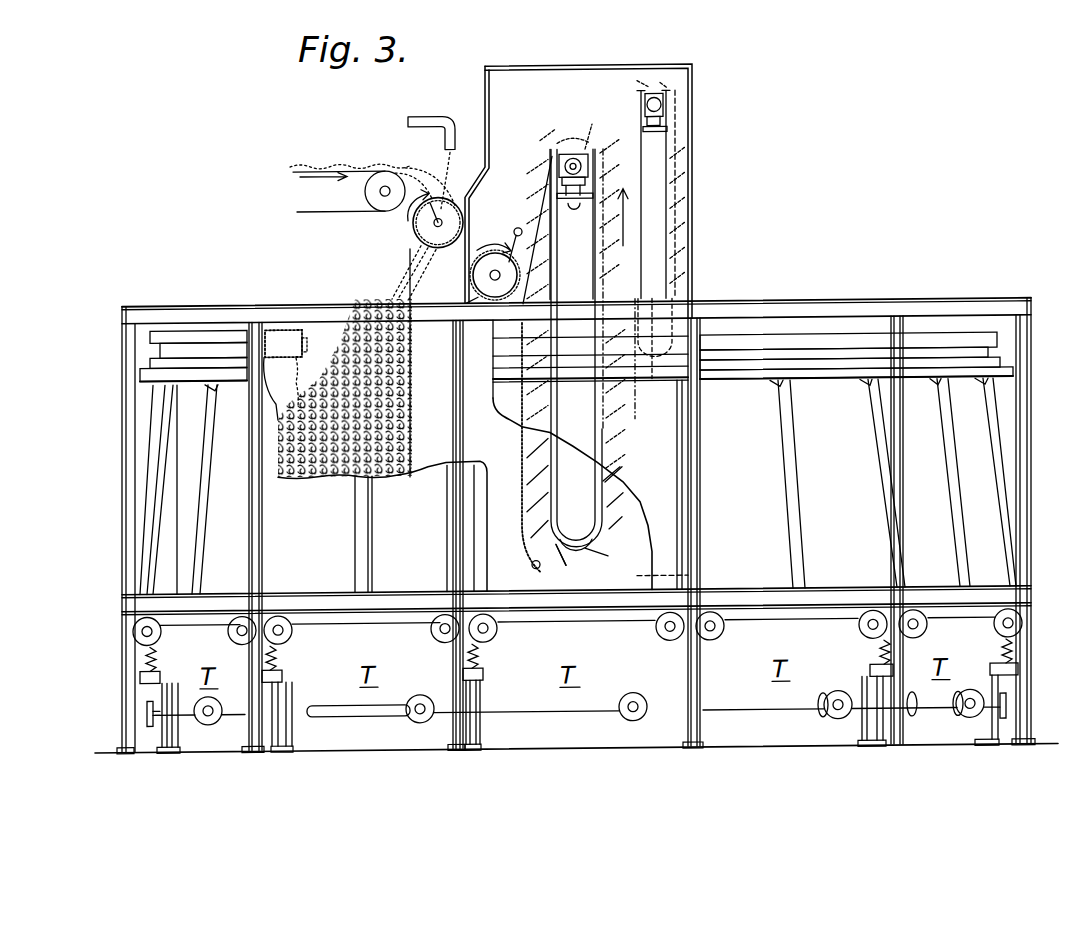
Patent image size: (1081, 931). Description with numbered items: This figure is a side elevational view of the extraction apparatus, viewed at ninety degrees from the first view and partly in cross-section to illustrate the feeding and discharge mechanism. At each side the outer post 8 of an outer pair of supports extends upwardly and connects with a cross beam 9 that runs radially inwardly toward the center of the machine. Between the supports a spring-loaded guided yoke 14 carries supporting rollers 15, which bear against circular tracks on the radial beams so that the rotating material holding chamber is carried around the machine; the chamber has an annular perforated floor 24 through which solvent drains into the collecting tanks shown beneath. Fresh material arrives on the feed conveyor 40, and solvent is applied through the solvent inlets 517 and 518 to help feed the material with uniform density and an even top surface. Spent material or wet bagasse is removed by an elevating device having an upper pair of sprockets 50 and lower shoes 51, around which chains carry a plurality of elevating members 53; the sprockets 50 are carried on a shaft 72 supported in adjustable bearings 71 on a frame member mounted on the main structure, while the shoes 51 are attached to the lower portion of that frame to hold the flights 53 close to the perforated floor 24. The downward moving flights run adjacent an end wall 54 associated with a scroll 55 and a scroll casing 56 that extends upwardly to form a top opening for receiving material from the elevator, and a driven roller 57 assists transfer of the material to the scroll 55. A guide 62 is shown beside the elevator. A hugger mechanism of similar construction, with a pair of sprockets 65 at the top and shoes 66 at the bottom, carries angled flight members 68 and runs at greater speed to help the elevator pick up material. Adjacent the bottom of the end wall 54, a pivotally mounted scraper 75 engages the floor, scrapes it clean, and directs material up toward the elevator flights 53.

The outer post 8 is at (125, 464).
The cross beam 9 is at (228, 298).
The guided yoke 14 is at (283, 641).
The supporting rollers 15 is at (291, 632).
The perforated floor 24 is at (628, 580).
The feed conveyor 40 is at (325, 168).
The sprockets 50 is at (582, 136).
The shoes 51 is at (578, 555).
The elevating members 53 is at (627, 518).
The end wall 54 is at (519, 436).
The scroll 55 is at (471, 273).
The scroll casing 56 is at (478, 300).
The driven roller 57 is at (516, 229).
The belt guide 62 is at (604, 492).
The sprockets 65 is at (669, 100).
The shoes 66 is at (655, 351).
The flight members 68 is at (682, 204).
The adjustable bearings 71 is at (560, 160).
The shaft 72 is at (588, 158).
The scraper 75 is at (557, 565).
The liquid supply pipe 517 is at (438, 116).
The discharge nozzle 518 is at (283, 340).